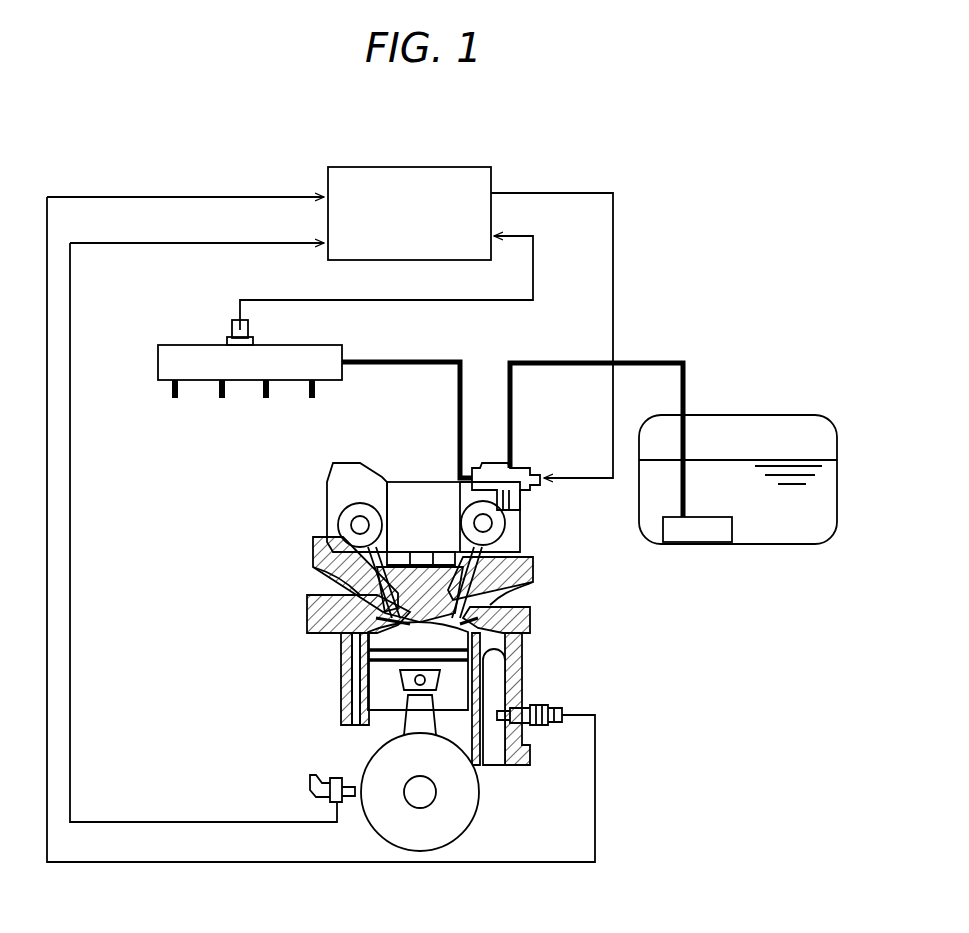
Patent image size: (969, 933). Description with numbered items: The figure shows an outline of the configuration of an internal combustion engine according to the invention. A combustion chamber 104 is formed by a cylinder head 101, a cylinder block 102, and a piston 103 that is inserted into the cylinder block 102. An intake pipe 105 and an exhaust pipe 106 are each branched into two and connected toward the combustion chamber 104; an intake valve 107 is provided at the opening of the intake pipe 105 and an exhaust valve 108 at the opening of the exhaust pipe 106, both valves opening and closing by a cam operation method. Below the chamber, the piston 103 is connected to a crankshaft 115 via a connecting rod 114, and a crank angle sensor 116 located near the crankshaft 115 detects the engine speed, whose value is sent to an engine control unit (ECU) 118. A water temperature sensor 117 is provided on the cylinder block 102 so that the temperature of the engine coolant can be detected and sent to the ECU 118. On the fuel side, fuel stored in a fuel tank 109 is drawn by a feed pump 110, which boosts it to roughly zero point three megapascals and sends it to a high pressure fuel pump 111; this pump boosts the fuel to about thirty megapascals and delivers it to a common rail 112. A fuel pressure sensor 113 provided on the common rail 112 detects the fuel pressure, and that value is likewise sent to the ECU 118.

The cylinder head 101 is at (305, 635).
The cylinder block 102 is at (522, 660).
The piston 103 is at (448, 705).
The combustion chamber 104 is at (355, 650).
The intake pipe 105 is at (310, 598).
The exhaust pipe 106 is at (540, 605).
The intake valve 107 is at (325, 575).
The exhaust valve 108 is at (520, 570).
The fuel tank 109 is at (800, 545).
The feed pump 110 is at (698, 535).
The high pressure fuel pump 111 is at (528, 460).
The common rail 112 is at (160, 345).
The fuel pressure sensor 113 is at (238, 325).
The connecting rod 114 is at (392, 737).
The crankshaft 115 is at (436, 792).
The crank angle sensor 116 is at (310, 775).
The water temperature sensor 117 is at (535, 708).
The engine control unit (ECU) 118 is at (482, 167).